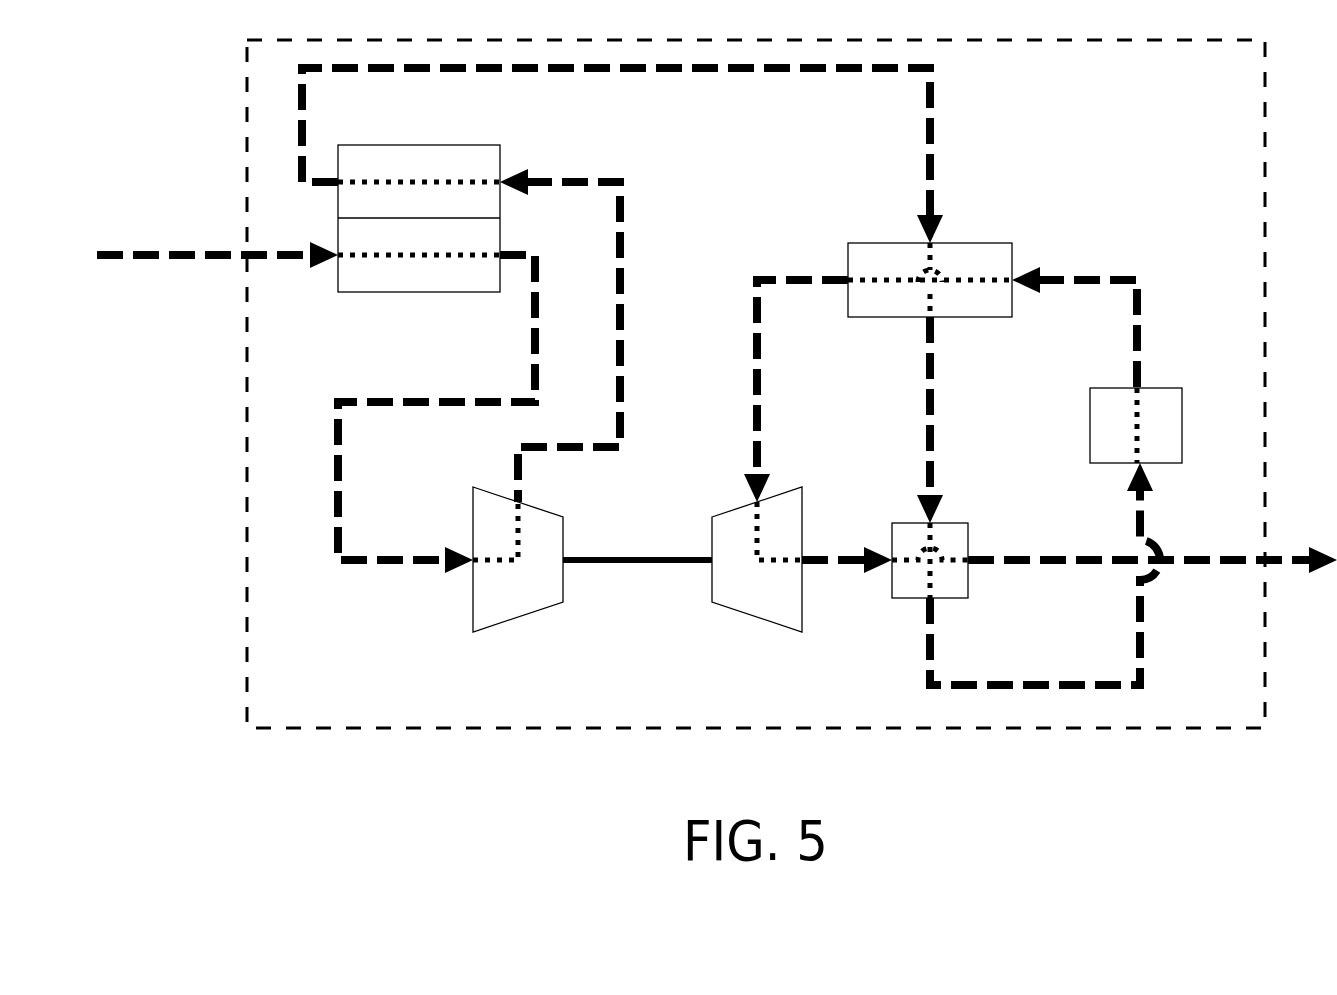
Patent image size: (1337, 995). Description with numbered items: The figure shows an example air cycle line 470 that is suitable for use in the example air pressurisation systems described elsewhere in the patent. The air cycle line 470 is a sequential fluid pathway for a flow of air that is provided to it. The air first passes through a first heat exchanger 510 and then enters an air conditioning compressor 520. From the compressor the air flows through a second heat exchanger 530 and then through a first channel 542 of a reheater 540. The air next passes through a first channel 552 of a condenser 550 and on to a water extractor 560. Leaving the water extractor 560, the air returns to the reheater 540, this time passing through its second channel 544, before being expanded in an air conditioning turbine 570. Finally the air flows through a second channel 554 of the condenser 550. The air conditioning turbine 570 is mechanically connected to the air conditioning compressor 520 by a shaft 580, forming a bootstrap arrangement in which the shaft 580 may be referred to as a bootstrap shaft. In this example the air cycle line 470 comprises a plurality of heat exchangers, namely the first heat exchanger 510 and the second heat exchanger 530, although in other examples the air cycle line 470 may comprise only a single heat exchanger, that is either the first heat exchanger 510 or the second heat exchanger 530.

The air cycle line 470 is at (1232, 97).
The first heat exchanger 510 is at (377, 278).
The air conditioning compressor 520 is at (542, 588).
The second heat exchanger 530 is at (475, 162).
The reheater 540 is at (980, 243).
The first channel of the reheater 542 is at (932, 293).
The second channel of the reheater 544 is at (970, 283).
The condenser 550 is at (908, 522).
The first channel of the condenser 552 is at (927, 572).
The second channel of the condenser 554 is at (940, 547).
The water extractor 560 is at (1162, 412).
The air conditioning turbine 570 is at (737, 588).
The shaft 580 is at (650, 565).